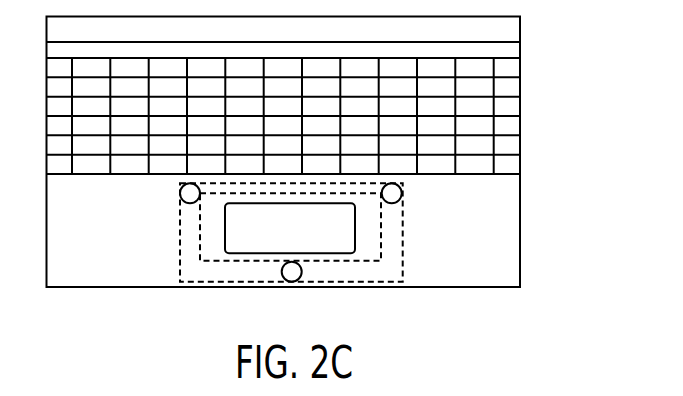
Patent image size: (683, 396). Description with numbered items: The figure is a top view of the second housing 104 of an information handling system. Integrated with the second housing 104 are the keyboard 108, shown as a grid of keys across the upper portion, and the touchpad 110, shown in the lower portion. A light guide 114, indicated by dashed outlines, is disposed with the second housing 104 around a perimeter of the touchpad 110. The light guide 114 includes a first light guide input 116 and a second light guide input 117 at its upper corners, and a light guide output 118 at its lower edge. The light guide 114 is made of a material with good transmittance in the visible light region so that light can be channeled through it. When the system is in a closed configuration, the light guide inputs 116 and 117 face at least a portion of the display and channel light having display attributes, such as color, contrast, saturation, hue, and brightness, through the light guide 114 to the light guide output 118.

The second housing 104 is at (520, 50).
The keyboard 108 is at (508, 125).
The touchpad 110 is at (225, 229).
The light guide 114 is at (403, 248).
The first light guide input 116 is at (402, 192).
The second light guide input 117 is at (180, 195).
The light guide output 118 is at (292, 272).